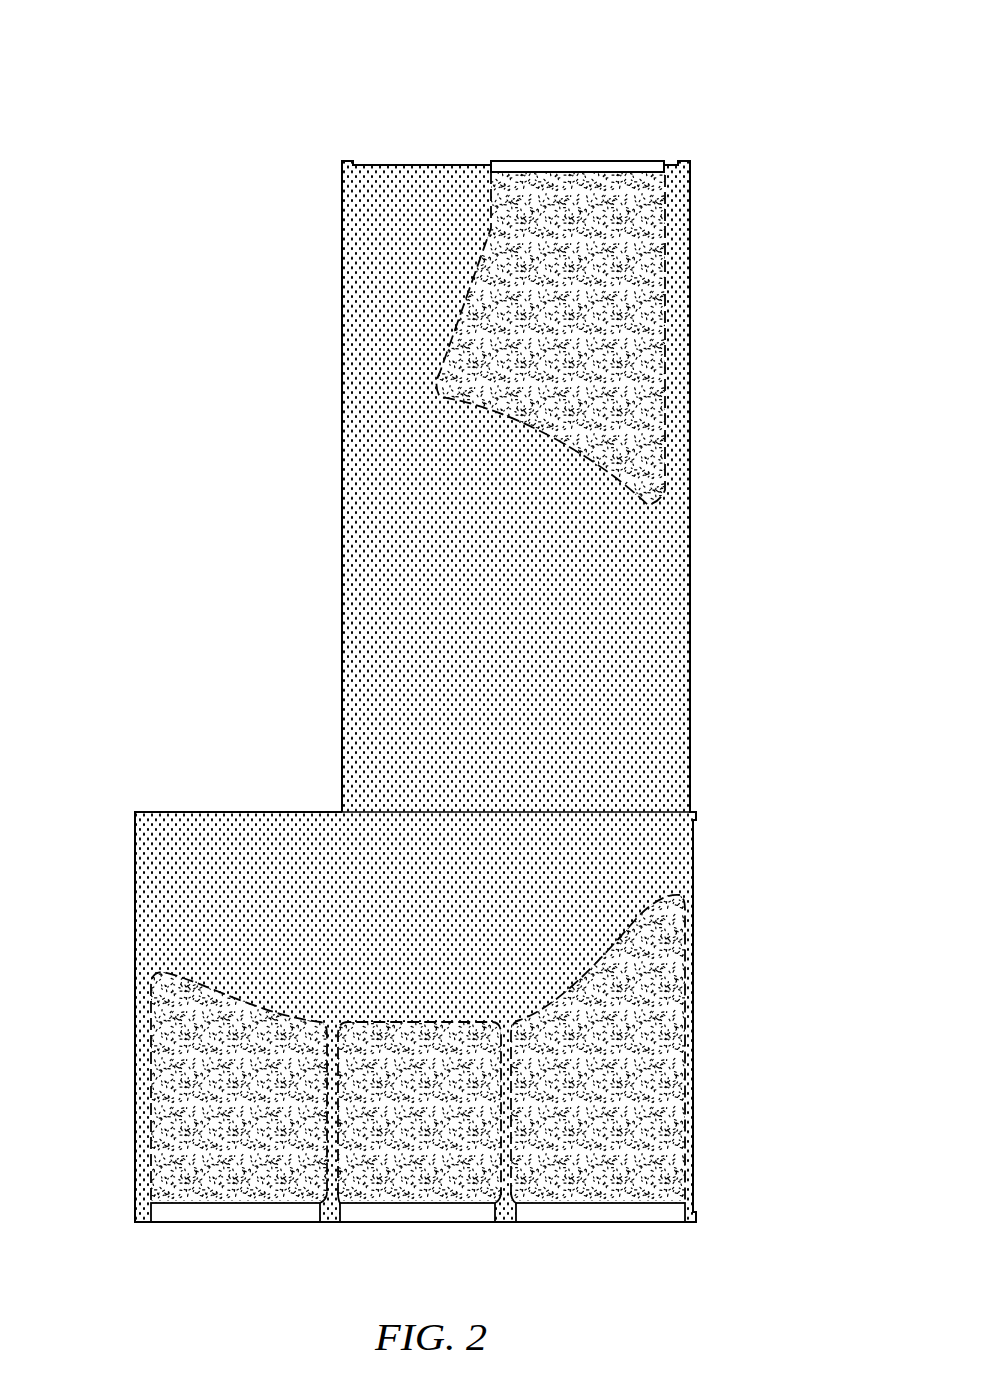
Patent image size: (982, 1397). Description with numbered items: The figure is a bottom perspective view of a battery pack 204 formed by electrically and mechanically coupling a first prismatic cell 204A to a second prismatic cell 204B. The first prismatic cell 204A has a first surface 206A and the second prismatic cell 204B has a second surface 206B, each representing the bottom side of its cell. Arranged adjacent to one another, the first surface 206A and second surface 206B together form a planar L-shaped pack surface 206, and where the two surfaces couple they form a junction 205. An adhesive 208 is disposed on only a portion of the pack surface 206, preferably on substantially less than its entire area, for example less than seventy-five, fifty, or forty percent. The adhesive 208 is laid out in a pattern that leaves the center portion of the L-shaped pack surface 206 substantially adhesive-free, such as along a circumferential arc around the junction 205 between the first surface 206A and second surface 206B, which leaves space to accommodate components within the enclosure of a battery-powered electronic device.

The battery pack 204 is at (545, 84).
The first prismatic cell 204A is at (690, 567).
The second prismatic cell 204B is at (693, 873).
The junction 205 is at (627, 812).
The pack surface 206 is at (395, 695).
The first surface 206A is at (377, 329).
The second surface 206B is at (177, 917).
The adhesive 208 is at (637, 315).